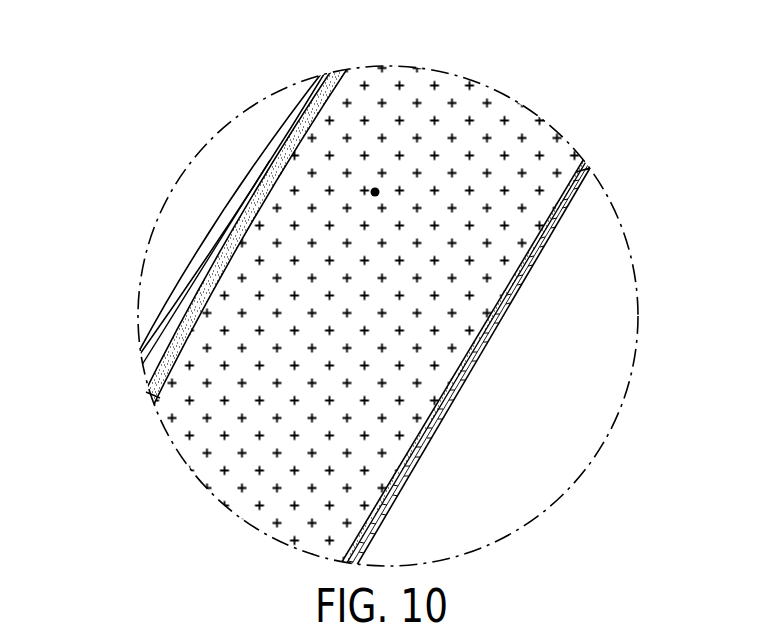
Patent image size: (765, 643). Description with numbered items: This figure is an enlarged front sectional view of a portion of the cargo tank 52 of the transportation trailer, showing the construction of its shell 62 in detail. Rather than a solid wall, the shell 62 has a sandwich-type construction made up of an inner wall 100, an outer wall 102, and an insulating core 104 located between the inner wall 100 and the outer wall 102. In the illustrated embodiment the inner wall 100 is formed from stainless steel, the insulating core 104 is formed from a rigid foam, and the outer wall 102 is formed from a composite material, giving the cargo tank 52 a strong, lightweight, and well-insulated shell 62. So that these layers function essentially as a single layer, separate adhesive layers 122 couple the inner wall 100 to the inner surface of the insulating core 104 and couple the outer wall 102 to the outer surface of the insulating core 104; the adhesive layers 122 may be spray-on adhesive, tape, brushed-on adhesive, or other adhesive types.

The cargo tank 52 is at (178, 252).
The shell 62 is at (248, 128).
The outer wall 102 is at (266, 138).
The insulating core 104 is at (448, 90).
The inner wall 100 is at (494, 330).
The adhesive layers 122 is at (148, 388).